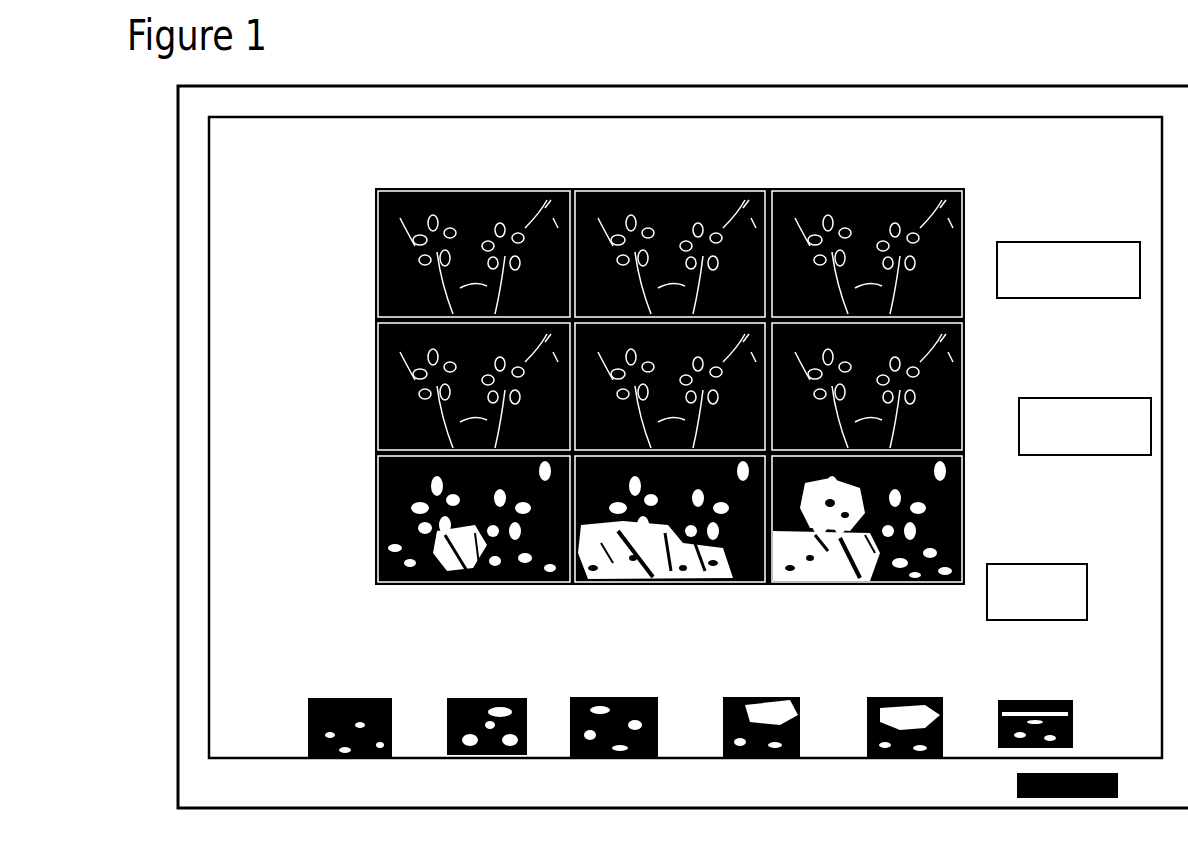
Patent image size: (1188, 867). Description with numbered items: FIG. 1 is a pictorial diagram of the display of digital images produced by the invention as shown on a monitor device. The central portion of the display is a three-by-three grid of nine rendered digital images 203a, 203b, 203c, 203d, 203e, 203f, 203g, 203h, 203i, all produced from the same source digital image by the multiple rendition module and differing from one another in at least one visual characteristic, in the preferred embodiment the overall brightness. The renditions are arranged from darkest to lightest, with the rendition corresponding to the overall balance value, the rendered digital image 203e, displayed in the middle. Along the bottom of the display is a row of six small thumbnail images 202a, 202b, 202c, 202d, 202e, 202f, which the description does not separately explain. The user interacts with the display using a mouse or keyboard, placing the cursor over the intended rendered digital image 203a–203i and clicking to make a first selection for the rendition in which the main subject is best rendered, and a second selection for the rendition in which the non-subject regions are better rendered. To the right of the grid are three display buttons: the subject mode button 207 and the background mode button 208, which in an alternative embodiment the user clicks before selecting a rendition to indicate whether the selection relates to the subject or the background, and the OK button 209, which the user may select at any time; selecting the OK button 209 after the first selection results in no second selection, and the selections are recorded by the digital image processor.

The thumbnail image 202a is at (350, 697).
The thumbnail image 202b is at (493, 693).
The thumbnail image 202c is at (623, 693).
The thumbnail image 202d is at (778, 693).
The thumbnail image 202e is at (910, 693).
The thumbnail image 202f is at (1043, 692).
The rendered digital image 203a is at (370, 240).
The rendered digital image 203b is at (680, 173).
The rendered digital image 203c is at (975, 238).
The rendered digital image 203d is at (370, 385).
The rendered digital image 203e is at (815, 188).
The rendered digital image 203f is at (970, 383).
The rendered digital image 203g is at (370, 540).
The rendered digital image 203h is at (692, 587).
The rendered digital image 203i is at (971, 540).
The subject mode button 207 is at (1107, 240).
The background mode button 208 is at (1108, 392).
The OK button 209 is at (1074, 562).